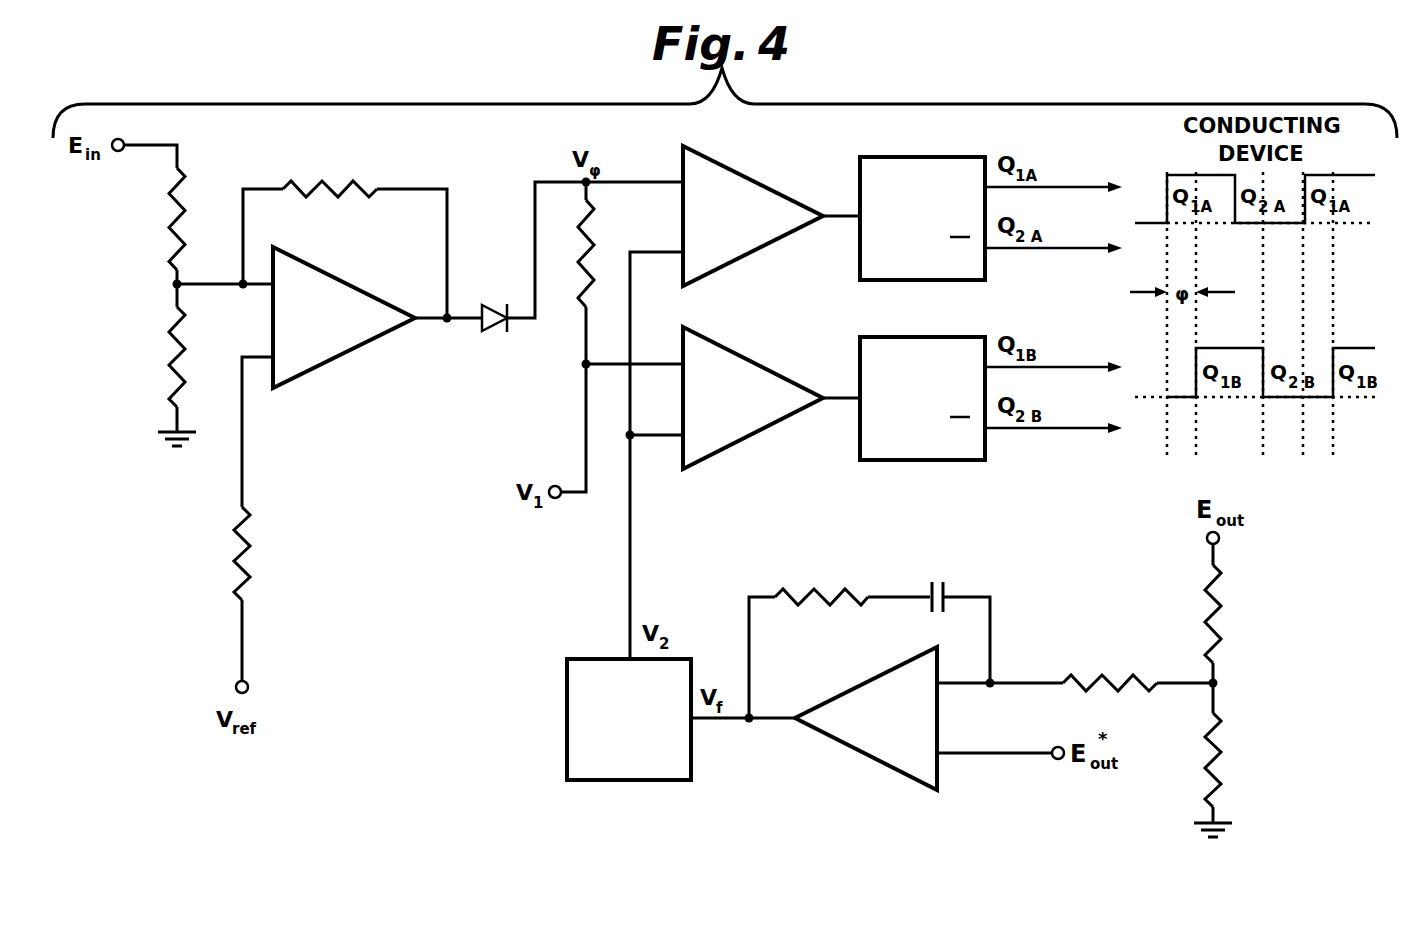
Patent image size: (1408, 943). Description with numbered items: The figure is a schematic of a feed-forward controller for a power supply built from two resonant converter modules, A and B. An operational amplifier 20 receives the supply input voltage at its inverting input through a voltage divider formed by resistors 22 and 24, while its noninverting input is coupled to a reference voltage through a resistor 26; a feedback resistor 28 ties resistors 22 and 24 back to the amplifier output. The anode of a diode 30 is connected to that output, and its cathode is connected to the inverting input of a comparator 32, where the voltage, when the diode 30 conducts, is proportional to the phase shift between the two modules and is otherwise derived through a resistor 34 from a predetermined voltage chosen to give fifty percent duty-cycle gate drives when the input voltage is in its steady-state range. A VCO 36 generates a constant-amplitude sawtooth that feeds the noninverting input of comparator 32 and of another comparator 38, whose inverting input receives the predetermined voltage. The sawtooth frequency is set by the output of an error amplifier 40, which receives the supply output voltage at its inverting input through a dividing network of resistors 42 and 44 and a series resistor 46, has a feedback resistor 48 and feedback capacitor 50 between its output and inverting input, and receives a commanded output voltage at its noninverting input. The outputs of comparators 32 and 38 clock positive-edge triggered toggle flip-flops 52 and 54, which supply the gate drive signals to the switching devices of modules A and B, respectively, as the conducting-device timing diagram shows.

The operational amplifier 20 is at (340, 277).
The resistor 22 is at (170, 236).
The resistor 24 is at (170, 355).
The resistor 26 is at (240, 547).
The feedback resistor 28 is at (335, 180).
The diode 30 is at (492, 303).
The comparator 32 is at (776, 188).
The resistor 34 is at (596, 267).
The VCO 36 is at (567, 708).
The comparator 38 is at (815, 384).
The error amplifier 40 is at (822, 734).
The resistor 42 is at (1210, 616).
The resistor 44 is at (1212, 738).
The resistor 46 is at (1128, 676).
The feedback resistor 48 is at (812, 590).
The feedback capacitor 50 is at (944, 596).
The toggle flip-flop 52 is at (858, 255).
The toggle flip-flop 54 is at (860, 456).